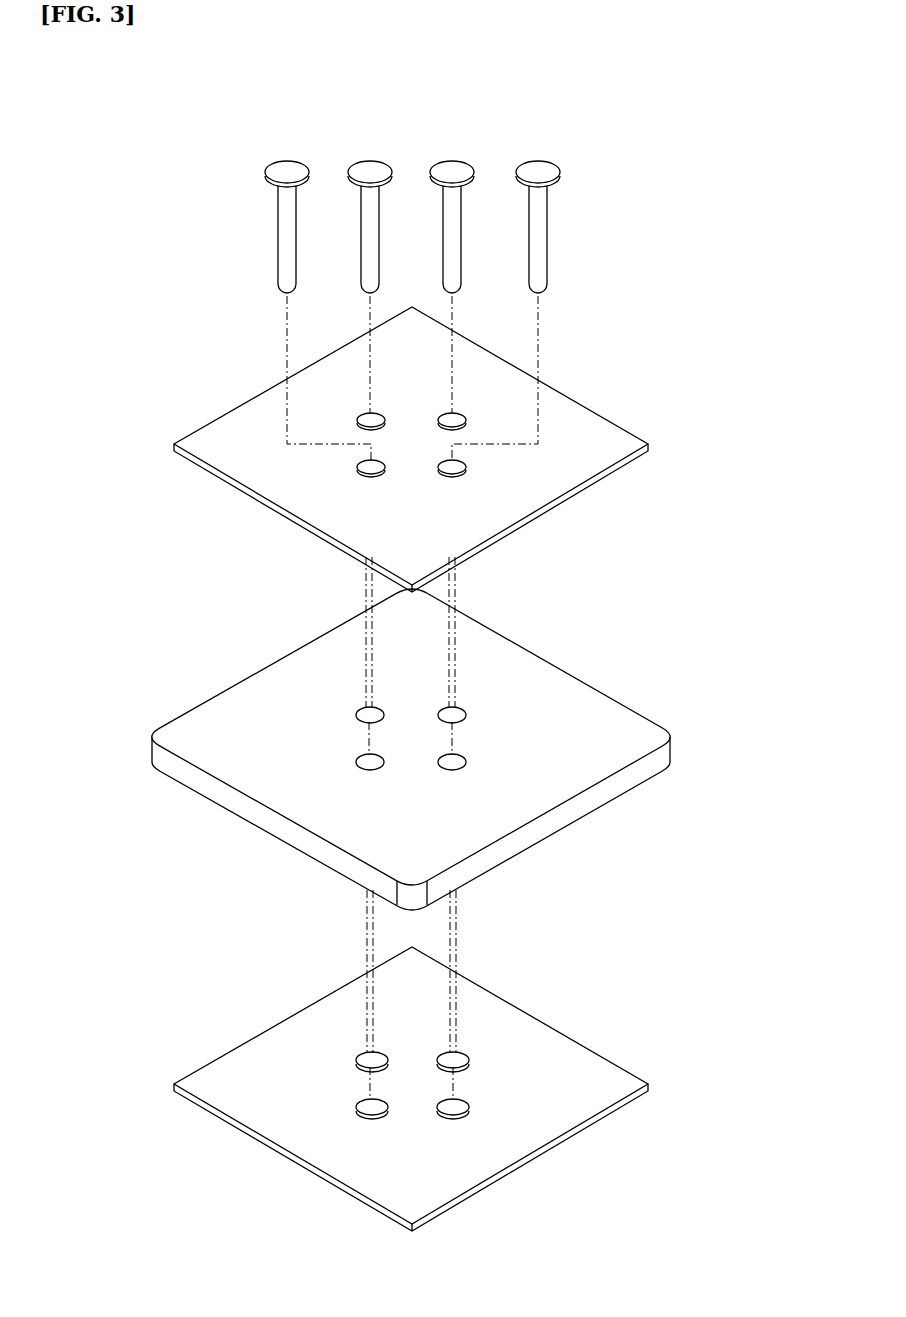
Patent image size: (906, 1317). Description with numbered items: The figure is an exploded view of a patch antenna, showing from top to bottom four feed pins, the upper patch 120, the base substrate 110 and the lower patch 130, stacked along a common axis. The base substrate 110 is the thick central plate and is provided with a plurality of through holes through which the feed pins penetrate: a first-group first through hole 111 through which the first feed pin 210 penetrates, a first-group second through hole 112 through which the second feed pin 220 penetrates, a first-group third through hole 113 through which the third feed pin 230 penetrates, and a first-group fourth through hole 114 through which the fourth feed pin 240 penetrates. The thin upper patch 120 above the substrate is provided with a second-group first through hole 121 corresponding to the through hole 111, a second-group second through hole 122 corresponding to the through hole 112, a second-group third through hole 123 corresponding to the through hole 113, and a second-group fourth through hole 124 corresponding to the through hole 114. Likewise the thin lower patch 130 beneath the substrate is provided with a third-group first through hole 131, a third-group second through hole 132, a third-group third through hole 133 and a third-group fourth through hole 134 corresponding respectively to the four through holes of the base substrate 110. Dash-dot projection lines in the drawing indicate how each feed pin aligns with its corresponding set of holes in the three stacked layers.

The base substrate 110 is at (676, 752).
The 1-1st through hole 111 is at (467, 710).
The 1-2nd through hole 112 is at (467, 768).
The 1-3rd through hole 113 is at (355, 761).
The 1-4th through hole 114 is at (357, 710).
The upper patch 120 is at (652, 444).
The 2-1st through hole 121 is at (466, 415).
The 2-2nd through hole 122 is at (466, 468).
The 2-3rd through hole 123 is at (357, 467).
The 2-4th through hole 124 is at (356, 416).
The lower patch 130 is at (652, 1085).
The 3-1st through hole 131 is at (469, 1057).
The 3-2nd through hole 132 is at (469, 1113).
The 3-3rd through hole 133 is at (356, 1108).
The 3-4th through hole 134 is at (354, 1057).
The first feed pin 210 is at (453, 157).
The second feed pin 220 is at (547, 157).
The third feed pin 230 is at (285, 157).
The fourth feed pin 240 is at (373, 157).